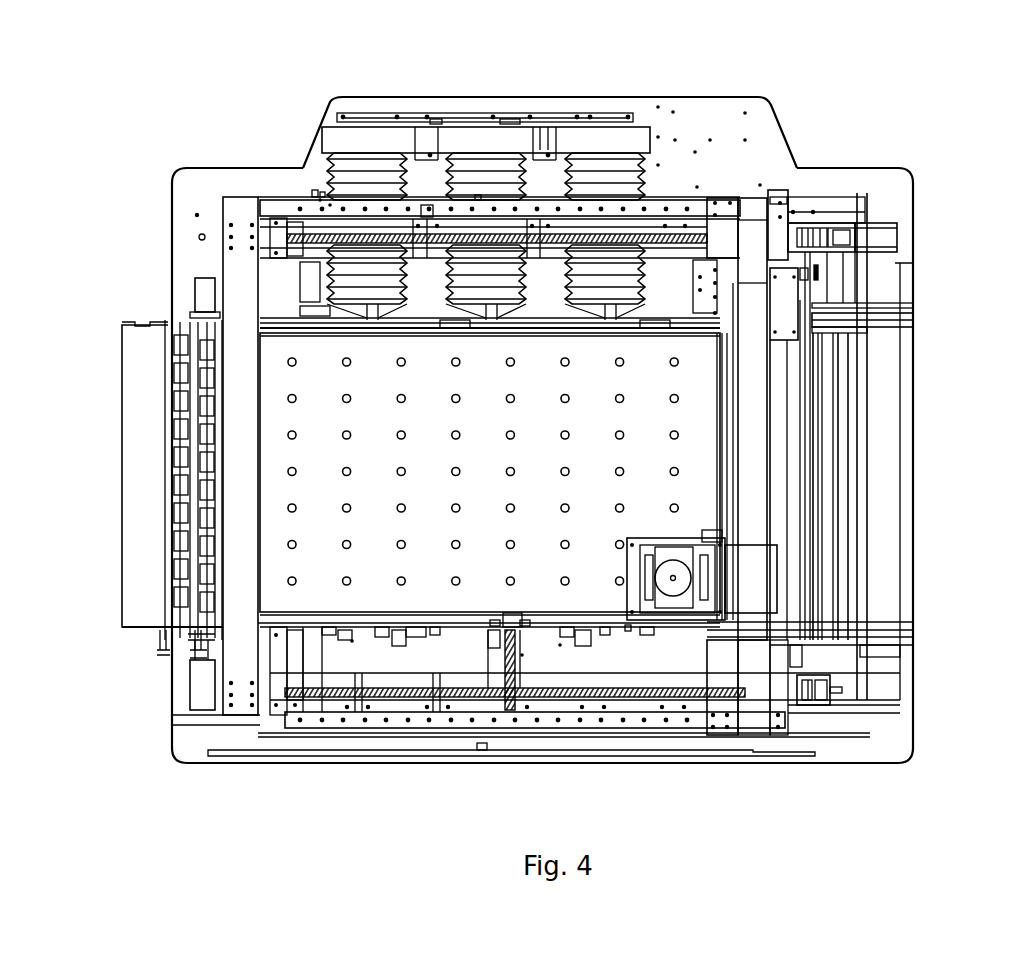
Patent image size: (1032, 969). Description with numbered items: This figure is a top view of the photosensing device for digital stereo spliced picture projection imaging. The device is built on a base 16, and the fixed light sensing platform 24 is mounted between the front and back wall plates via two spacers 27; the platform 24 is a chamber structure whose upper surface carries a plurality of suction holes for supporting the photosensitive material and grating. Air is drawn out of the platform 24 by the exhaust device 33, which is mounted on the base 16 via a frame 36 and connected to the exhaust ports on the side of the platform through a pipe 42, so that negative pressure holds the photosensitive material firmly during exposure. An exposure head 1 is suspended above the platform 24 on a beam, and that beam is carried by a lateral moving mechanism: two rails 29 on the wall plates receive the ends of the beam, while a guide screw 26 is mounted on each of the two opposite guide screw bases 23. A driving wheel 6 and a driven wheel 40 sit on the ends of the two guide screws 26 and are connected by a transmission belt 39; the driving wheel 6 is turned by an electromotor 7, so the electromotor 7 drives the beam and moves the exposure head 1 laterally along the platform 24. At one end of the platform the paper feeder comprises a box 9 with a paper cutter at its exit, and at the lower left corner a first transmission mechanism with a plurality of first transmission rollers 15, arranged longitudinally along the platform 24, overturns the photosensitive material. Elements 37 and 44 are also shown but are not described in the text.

The exposure head 1 is at (665, 572).
The driving wheel 6 is at (813, 233).
The electromotor 7 is at (882, 240).
The box 9 is at (893, 423).
The first transmission rollers 15 is at (213, 522).
The base 16 is at (710, 112).
The guide screw base 23 is at (273, 235).
The light sensing platform 24 is at (320, 490).
The guide screw 26 is at (685, 235).
The spacers 27 is at (243, 642).
The rails 29 is at (675, 210).
The exhaust device 33 is at (377, 138).
The frame 36 is at (617, 112).
The bottom bracket 37 is at (198, 708).
The transmission belt 39 is at (817, 293).
The driven wheel 40 is at (833, 687).
The pipe 42 is at (337, 168).
The stop block 44 is at (202, 288).